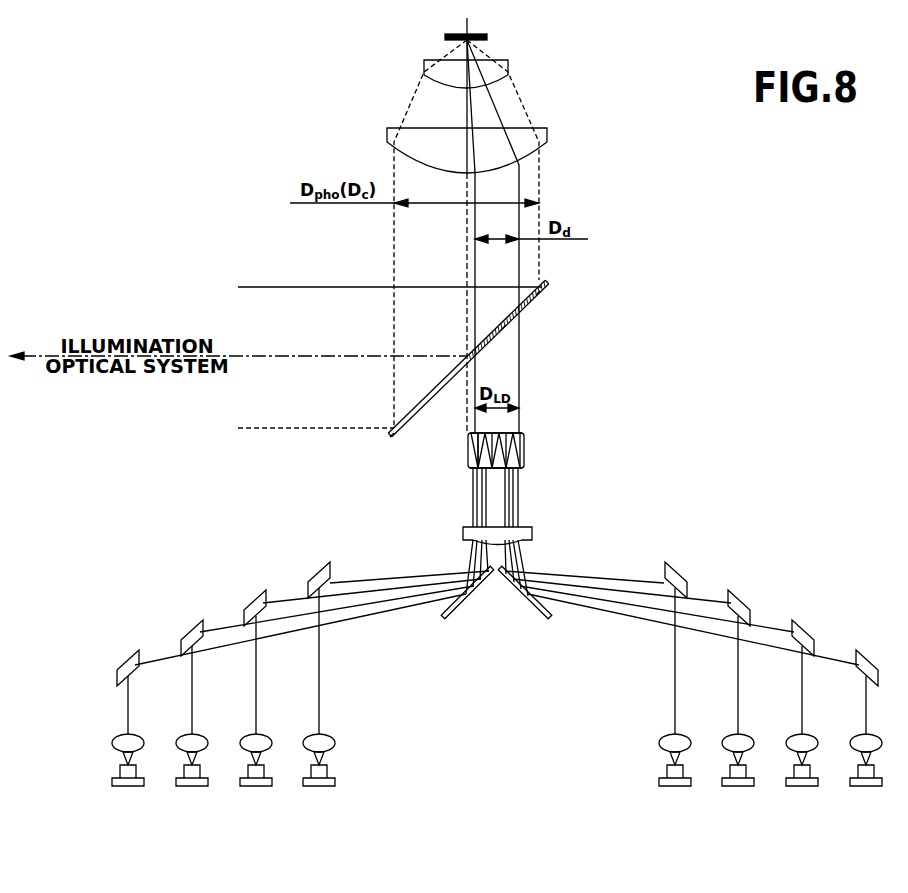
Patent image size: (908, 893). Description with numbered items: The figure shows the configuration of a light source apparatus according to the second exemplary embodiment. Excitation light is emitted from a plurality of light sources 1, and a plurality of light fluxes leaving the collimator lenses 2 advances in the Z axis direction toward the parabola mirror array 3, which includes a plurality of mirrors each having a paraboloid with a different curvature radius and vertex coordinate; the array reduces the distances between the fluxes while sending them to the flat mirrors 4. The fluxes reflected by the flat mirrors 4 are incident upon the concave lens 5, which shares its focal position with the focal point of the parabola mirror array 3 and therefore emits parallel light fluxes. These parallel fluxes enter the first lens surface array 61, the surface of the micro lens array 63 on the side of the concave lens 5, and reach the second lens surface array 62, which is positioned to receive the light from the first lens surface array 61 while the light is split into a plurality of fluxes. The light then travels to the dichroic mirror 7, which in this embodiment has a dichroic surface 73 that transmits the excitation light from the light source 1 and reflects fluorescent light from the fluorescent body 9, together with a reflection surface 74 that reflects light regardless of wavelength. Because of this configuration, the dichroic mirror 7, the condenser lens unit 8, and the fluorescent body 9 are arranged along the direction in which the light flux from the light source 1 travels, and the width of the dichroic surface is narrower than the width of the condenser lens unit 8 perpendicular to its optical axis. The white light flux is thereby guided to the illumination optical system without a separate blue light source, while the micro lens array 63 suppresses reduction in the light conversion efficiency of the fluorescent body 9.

The light source 1 is at (337, 783).
The collimator lens 2 is at (337, 743).
The parabola mirror array 3 is at (322, 537).
The flat mirrors 4 is at (550, 622).
The concave lens 5 is at (534, 531).
The dichroic mirror 7 is at (552, 282).
The condenser lens unit 8 is at (553, 43).
The fluorescent body 9 is at (443, 38).
The first lens surface array 61 is at (470, 467).
The second lens surface array 62 is at (468, 434).
The micro lens array 63 is at (526, 450).
The dichroic surface 73 is at (503, 336).
The reflection surface 74 is at (538, 298).